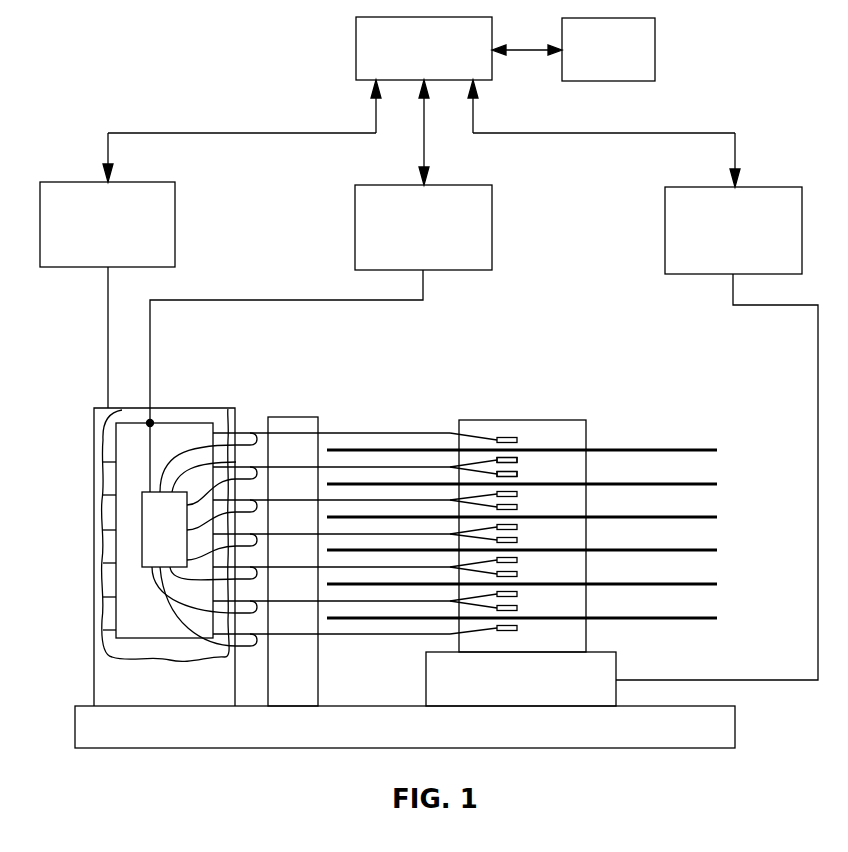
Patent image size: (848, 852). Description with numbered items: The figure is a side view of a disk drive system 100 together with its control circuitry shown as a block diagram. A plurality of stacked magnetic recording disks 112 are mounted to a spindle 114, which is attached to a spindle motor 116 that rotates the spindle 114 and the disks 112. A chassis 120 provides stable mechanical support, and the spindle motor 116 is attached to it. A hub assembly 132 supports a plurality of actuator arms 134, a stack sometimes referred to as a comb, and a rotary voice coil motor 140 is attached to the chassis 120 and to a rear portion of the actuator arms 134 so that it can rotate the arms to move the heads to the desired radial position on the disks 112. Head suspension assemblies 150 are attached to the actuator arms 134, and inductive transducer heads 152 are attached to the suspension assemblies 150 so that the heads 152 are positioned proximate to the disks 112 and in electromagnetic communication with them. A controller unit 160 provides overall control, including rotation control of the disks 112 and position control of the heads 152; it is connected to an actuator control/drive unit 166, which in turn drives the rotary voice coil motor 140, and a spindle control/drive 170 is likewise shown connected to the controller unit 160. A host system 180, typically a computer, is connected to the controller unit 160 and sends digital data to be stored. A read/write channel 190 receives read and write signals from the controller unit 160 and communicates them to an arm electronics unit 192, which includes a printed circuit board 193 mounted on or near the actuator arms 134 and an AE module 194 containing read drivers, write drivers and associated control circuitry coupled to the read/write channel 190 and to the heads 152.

The disk drive system 100 is at (64, 440).
The magnetic recording disks 112 is at (700, 486).
The spindle 114 is at (600, 432).
The spindle motor 116 is at (616, 663).
The chassis 120 is at (735, 740).
The hub assembly 132 is at (290, 417).
The actuator arms 134 is at (428, 467).
The rotary voice coil motor 140 is at (96, 677).
The head suspension assemblies 150 is at (495, 441).
The inductive transducer heads 152 is at (518, 459).
The controller unit 160 is at (356, 58).
The actuator control/drive unit 166 is at (175, 240).
The spindle control/drive 170 is at (665, 216).
The host system 180 is at (655, 44).
The read/write channel 190 is at (355, 218).
The arm electronics unit 192 is at (122, 471).
The printed circuit board 193 is at (164, 530).
The AE module 194 is at (164, 529).